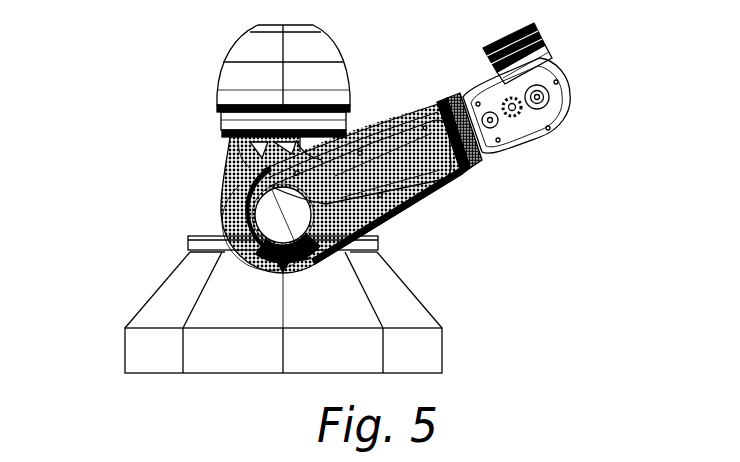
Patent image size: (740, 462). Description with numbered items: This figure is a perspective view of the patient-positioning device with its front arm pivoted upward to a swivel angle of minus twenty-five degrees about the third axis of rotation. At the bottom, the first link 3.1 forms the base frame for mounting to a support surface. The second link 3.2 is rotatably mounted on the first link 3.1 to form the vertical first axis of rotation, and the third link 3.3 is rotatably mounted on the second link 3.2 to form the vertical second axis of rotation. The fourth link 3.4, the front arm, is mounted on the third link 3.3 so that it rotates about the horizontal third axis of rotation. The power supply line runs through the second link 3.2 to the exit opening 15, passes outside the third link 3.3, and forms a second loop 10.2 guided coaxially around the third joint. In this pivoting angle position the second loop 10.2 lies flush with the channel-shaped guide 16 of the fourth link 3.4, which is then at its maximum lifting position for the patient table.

The first link 3.1 is at (147, 318).
The second link 3.2 is at (250, 57).
The third link 3.3 is at (241, 160).
The fourth link 3.4 is at (340, 202).
The exit opening 15 is at (292, 140).
The channel-shaped guide 16 is at (225, 197).
The second loop 10.2 is at (224, 215).